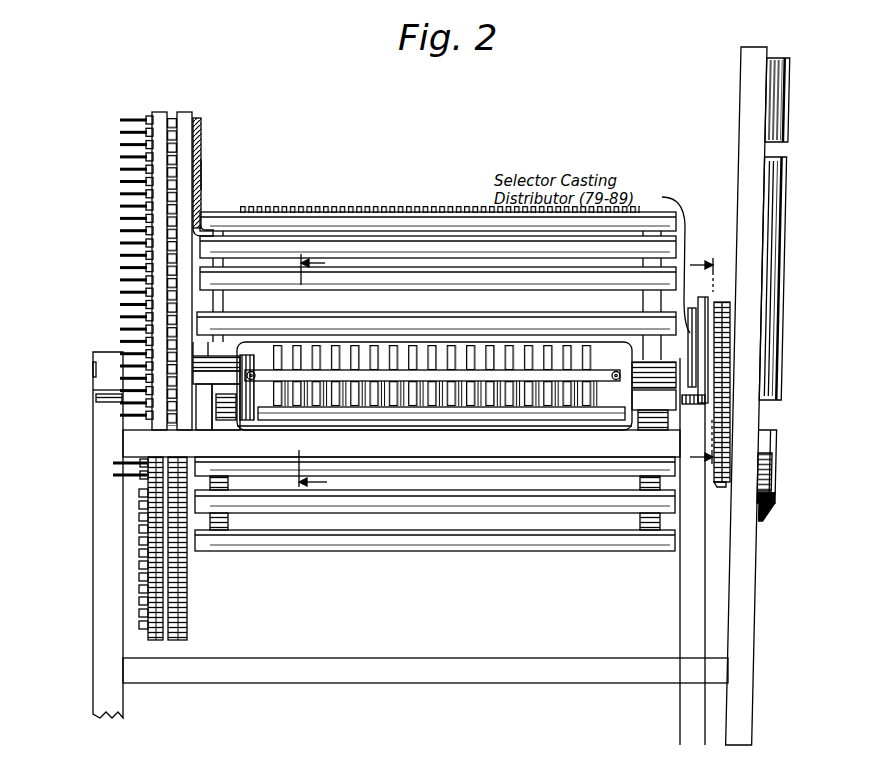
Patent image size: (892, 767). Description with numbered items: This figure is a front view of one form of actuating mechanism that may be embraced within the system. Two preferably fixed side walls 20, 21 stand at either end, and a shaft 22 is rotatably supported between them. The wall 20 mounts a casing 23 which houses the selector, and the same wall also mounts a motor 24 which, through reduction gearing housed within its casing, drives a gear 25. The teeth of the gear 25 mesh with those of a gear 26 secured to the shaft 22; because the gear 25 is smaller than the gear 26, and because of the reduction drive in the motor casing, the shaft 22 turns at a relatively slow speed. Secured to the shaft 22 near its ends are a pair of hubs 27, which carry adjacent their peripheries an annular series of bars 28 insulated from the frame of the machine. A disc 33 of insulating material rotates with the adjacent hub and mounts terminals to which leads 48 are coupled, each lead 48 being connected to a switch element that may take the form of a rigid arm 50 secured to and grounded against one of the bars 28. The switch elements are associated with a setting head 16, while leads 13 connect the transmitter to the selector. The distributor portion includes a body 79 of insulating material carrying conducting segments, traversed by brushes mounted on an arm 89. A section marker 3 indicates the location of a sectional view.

The side wall 20 is at (726, 396).
The side wall 21 is at (160, 111).
The shaft 22 is at (196, 357).
The casing 23 is at (744, 229).
The motor 24 is at (752, 475).
The gear 25 is at (722, 486).
The gear 26 is at (718, 422).
The hub 27 is at (222, 304).
The bar 28 is at (412, 500).
The disc 33 is at (196, 168).
The lead 48 is at (202, 174).
The rigid arm 50 is at (346, 207).
The setting head 16 is at (434, 386).
The leads 13 is at (707, 362).
The body 79 is at (691, 308).
The arm 89 is at (692, 340).
The section line marker 3 is at (303, 374).